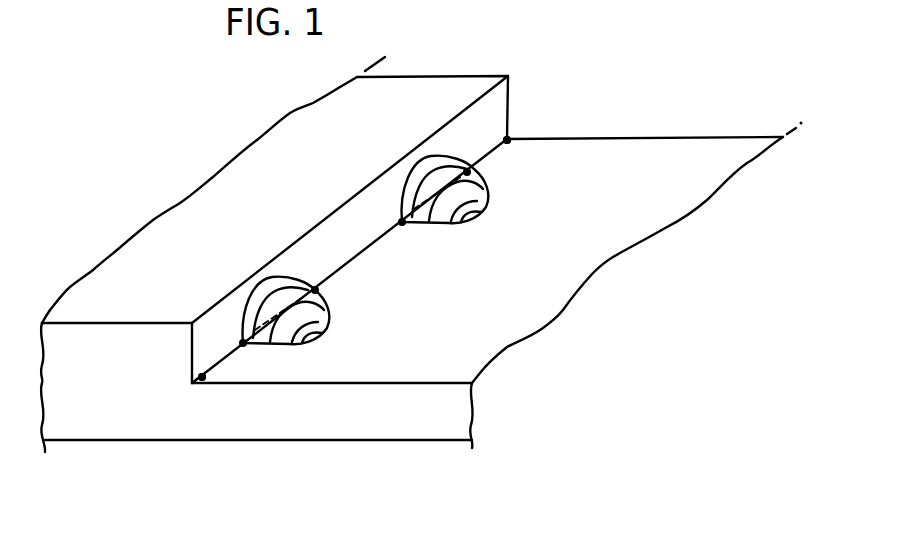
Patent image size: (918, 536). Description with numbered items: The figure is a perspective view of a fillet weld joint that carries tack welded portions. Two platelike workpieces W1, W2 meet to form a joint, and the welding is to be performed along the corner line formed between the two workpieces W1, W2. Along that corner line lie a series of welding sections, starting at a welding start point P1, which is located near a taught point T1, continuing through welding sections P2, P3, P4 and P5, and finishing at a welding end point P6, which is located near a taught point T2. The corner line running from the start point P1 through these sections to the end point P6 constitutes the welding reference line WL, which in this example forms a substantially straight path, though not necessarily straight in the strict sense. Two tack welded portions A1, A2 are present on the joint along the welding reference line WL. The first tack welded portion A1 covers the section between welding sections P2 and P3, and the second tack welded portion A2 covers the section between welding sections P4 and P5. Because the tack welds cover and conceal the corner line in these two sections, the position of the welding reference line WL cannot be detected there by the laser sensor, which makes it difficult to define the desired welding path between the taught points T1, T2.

The platelike workpiece W1 is at (575, 271).
The platelike workpiece W2 is at (335, 168).
The welding reference line WL is at (280, 313).
The tack welded portion A1 is at (266, 309).
The tack welded portion A2 is at (428, 176).
The welding start point P1 is at (203, 378).
The taught point T1 is at (255, 439).
The welding section P2 is at (243, 343).
The welding section P3 is at (315, 290).
The welding section P4 is at (402, 222).
The welding section P5 is at (467, 172).
The welding end point P6 is at (507, 140).
The taught point T2 is at (591, 104).